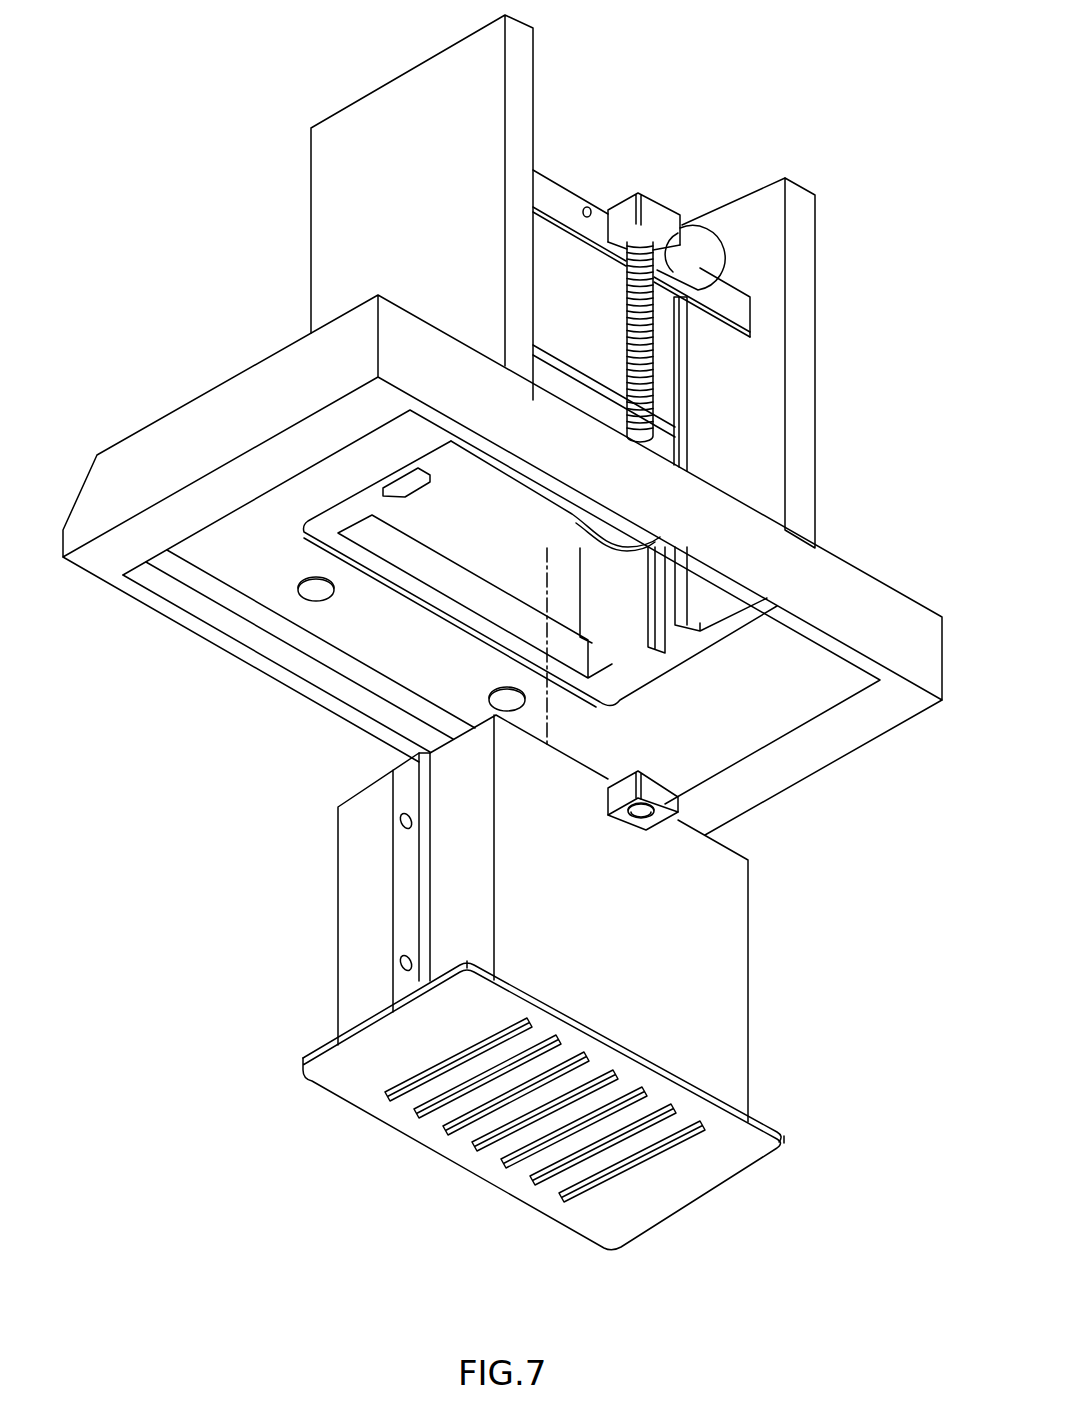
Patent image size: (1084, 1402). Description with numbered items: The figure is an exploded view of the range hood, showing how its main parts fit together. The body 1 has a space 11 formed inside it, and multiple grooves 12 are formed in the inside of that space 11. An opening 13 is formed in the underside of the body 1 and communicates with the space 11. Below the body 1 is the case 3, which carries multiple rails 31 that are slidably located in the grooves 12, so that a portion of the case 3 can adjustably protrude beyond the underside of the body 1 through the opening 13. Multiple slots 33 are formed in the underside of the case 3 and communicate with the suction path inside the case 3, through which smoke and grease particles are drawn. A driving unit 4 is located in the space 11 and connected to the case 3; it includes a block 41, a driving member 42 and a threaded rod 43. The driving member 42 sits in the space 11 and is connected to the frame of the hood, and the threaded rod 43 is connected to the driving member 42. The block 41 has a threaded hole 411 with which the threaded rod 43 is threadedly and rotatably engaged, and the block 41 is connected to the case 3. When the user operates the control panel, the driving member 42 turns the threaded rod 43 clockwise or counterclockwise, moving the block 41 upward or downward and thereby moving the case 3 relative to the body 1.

The body 1 is at (283, 207).
The space 11 is at (605, 148).
The grooves 12 is at (670, 630).
The opening 13 is at (650, 690).
The case 3 is at (341, 829).
The rails 31 is at (400, 932).
The slots 33 is at (665, 1138).
The driving unit 4 is at (742, 223).
The block 41 is at (672, 790).
The threaded hole 411 is at (646, 812).
The driving member 42 is at (685, 215).
The threaded rod 43 is at (657, 378).